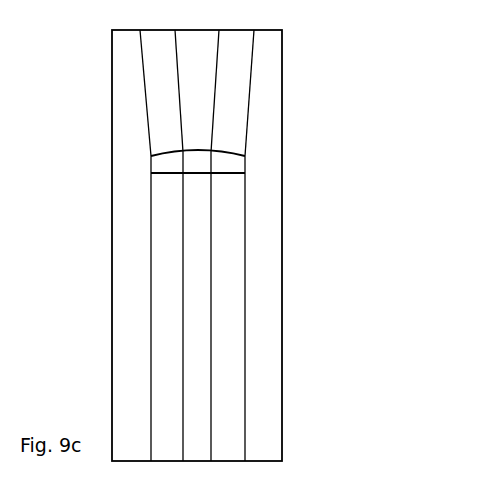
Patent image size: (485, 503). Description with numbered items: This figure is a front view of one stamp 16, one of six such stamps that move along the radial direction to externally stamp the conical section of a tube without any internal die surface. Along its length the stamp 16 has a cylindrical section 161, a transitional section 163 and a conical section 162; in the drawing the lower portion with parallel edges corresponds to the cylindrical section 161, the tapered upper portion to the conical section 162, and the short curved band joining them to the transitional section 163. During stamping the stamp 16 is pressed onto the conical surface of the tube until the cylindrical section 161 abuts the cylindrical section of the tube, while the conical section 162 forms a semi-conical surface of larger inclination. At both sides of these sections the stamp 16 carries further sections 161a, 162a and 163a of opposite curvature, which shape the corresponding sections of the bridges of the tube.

The stamp 16 is at (298, 247).
The cylindrical section 161 is at (288, 317).
The cylindrical section 161a is at (359, 317).
The conical section 162 is at (198, 59).
The cylindrical section 162a is at (348, 93).
The transitional section 163 is at (288, 168).
The cylindrical section 163a is at (318, 216).